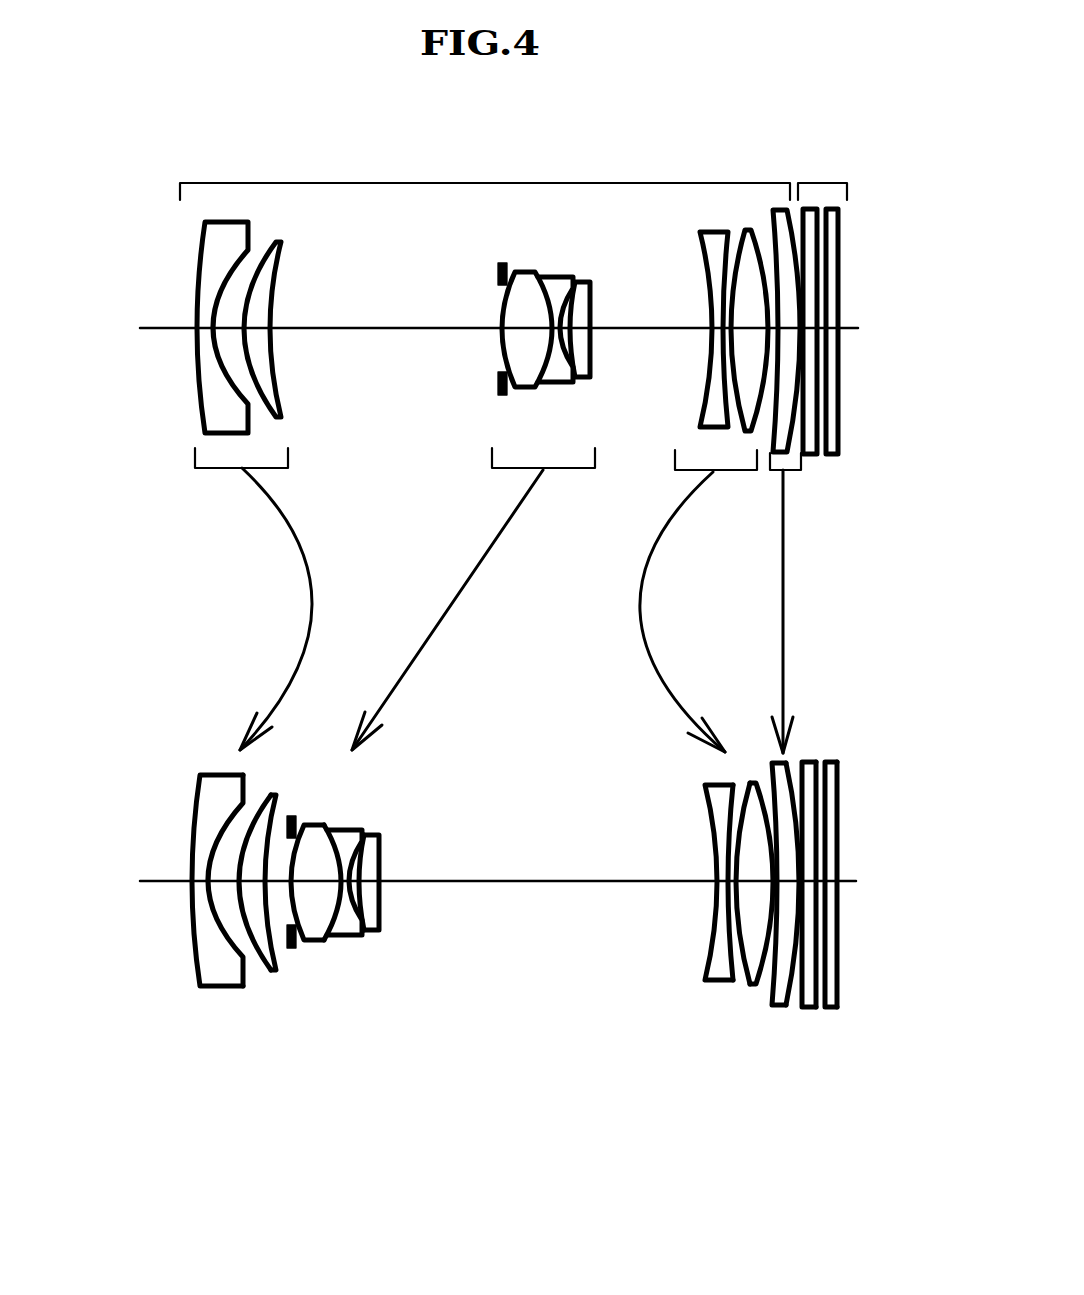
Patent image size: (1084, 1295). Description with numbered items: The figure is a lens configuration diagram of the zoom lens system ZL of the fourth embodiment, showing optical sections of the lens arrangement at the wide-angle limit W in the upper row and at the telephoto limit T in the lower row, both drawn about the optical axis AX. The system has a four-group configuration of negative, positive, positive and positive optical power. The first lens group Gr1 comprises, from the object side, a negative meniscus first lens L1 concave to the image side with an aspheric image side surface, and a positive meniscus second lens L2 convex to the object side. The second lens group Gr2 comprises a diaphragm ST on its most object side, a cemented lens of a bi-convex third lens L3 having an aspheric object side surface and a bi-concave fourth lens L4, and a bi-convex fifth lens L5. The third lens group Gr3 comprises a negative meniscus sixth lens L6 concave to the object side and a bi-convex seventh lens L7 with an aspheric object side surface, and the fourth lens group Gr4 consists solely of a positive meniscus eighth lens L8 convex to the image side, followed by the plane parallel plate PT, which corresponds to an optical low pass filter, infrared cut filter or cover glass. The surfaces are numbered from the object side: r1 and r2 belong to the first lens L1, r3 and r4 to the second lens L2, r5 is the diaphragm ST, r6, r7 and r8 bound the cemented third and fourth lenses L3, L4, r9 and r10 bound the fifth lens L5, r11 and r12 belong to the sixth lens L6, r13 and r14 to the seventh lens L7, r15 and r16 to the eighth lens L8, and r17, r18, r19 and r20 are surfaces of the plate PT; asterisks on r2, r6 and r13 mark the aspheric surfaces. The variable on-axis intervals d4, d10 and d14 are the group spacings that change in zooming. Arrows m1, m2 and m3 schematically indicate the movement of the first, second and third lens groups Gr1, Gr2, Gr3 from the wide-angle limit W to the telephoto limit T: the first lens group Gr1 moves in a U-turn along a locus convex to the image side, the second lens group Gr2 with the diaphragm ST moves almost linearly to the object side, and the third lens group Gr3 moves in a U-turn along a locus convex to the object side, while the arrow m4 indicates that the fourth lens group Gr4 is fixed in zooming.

The zoom lens system ZL is at (485, 178).
The plane parallel plate PT is at (822, 178).
The optical axis AX is at (519, 599).
The wide-angle limit W is at (83, 329).
The telephoto limit T is at (78, 882).
The first lens L1 is at (197, 263).
The second lens L2 is at (280, 275).
The third lens L3 is at (530, 387).
The fourth lens L4 is at (557, 382).
The fifth lens L5 is at (580, 377).
The sixth lens L6 is at (700, 247).
The seventh lens L7 is at (741, 236).
The eighth lens L8 is at (777, 210).
The diaphragm ST is at (502, 329).
The fourth on-the-axis interval d4 is at (366, 314).
The tenth on-the-axis interval d10 is at (642, 316).
The fourteenth on-the-axis interval d14 is at (762, 400).
The first lens group Gr1 is at (218, 482).
The second lens group Gr2 is at (521, 482).
The third lens group Gr3 is at (693, 483).
The fourth lens group Gr4 is at (806, 485).
The arrow indicating movement of first lens group m1 is at (308, 623).
The arrow indicating movement of second lens group m2 is at (432, 637).
The arrow indicating movement of third lens group m3 is at (655, 670).
The arrow indicating fixed fourth lens group m4 is at (785, 637).
The first surface r1 is at (193, 922).
The second surface r2 is at (227, 935).
The third surface r3 is at (265, 960).
The fourth surface r4 is at (277, 968).
The fifth surface r5 is at (292, 958).
The sixth surface r6 is at (303, 937).
The seventh surface r7 is at (335, 937).
The eighth surface r8 is at (348, 923).
The ninth surface r9 is at (368, 910).
The tenth surface r10 is at (382, 895).
The eleventh surface r11 is at (708, 935).
The twelfth surface r12 is at (707, 948).
The thirteenth surface r13 is at (738, 945).
The fourteenth surface r14 is at (762, 987).
The fifteenth surface r15 is at (778, 1003).
The sixteenth surface r16 is at (792, 1000).
The seventeenth surface r17 is at (808, 800).
The eighteenth surface r18 is at (817, 828).
The nineteenth surface r19 is at (823, 857).
The twentieth surface r20 is at (840, 897).